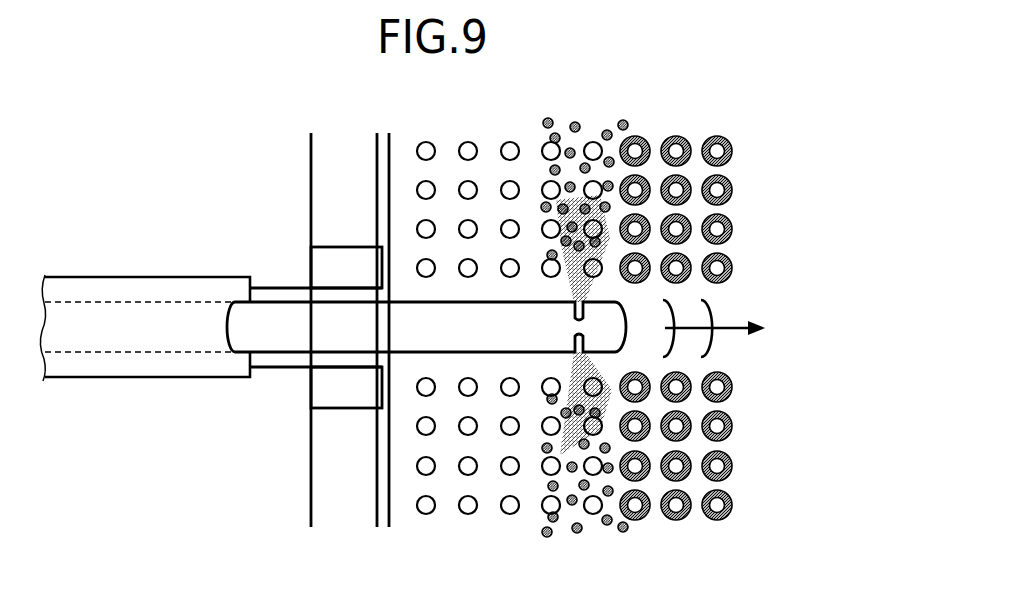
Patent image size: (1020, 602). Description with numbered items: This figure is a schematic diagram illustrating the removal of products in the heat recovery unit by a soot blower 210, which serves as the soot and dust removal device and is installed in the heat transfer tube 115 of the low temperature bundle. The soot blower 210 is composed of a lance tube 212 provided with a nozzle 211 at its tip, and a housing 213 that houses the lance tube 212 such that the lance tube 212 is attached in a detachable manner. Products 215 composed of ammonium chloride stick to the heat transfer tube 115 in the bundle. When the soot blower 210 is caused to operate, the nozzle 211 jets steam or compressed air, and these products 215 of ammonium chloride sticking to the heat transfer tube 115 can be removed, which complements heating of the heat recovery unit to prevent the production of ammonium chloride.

The soot blower 210 is at (173, 156).
The nozzle 211 is at (612, 312).
The lance tube 212 is at (280, 300).
The housing 213 is at (160, 378).
The heat transfer tube 115 is at (468, 514).
The products 215 is at (630, 527).